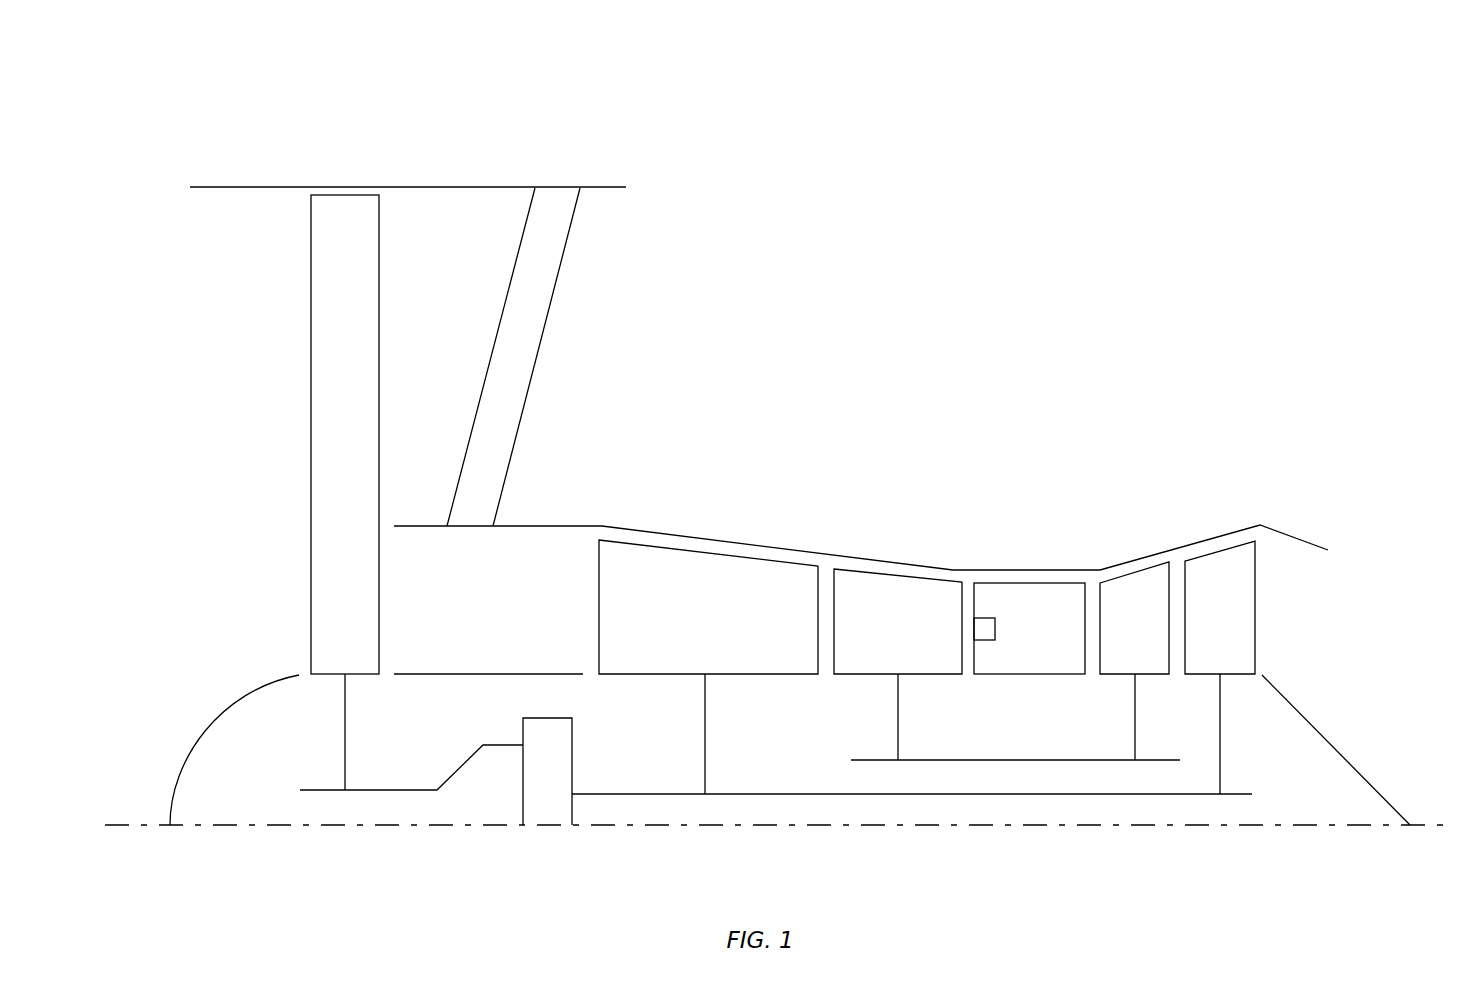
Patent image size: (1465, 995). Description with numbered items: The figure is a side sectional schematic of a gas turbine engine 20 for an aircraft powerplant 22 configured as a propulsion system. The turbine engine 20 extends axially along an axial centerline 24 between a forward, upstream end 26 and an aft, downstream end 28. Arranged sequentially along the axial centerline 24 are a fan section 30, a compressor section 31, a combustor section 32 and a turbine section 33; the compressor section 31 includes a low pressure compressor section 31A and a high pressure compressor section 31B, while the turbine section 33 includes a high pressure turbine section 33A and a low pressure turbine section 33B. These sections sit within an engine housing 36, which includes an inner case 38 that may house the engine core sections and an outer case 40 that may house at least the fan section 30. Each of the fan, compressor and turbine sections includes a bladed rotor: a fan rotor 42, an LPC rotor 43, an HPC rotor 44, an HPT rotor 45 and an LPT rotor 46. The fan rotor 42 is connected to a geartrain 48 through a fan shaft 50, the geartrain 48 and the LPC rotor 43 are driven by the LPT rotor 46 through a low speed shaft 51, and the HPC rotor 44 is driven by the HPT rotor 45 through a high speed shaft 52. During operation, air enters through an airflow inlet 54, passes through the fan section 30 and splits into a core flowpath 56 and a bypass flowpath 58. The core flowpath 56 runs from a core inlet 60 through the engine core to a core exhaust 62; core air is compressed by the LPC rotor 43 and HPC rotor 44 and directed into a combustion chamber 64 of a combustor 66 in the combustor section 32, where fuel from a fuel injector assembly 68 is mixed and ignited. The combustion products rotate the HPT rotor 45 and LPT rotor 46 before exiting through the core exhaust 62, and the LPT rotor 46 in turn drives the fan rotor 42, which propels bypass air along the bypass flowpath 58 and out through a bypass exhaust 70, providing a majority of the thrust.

The gas turbine engine 20 is at (183, 146).
The powerplant 22 is at (1283, 226).
The axial centerline 24 is at (1340, 828).
The forward upstream end 26 is at (190, 187).
The aft downstream end 28 is at (1410, 825).
The fan section 30 is at (341, 175).
The compressor section 31 is at (780, 499).
The low pressure compressor section 31A is at (817, 438).
The high pressure compressor section 31B is at (898, 533).
The combustor section 32 is at (1036, 533).
The turbine section 33 is at (1177, 499).
The high pressure turbine section 33A is at (1100, 438).
The low pressure turbine section 33B is at (1220, 533).
The engine housing 36 is at (662, 192).
The inner case 38 is at (712, 524).
The outer case 40 is at (516, 175).
The fan rotor 42 is at (345, 726).
The LPC rotor 43 is at (705, 760).
The HPC rotor 44 is at (898, 725).
The HPT rotor 45 is at (1135, 727).
The LPT rotor 46 is at (1220, 727).
The geartrain 48 is at (534, 783).
The fan shaft 50 is at (389, 790).
The low speed shaft 51 is at (1163, 794).
The high speed shaft 52 is at (1032, 759).
The airflow inlet 54 is at (175, 384).
The core flowpath 56 is at (456, 621).
The bypass flowpath 58 is at (427, 344).
The core inlet 60 is at (395, 604).
The core exhaust 62 is at (1328, 630).
The combustion chamber 64 is at (1023, 640).
The combustor 66 is at (1072, 572).
The fuel injector assembly 68 is at (985, 618).
The bypass exhaust 70 is at (620, 264).